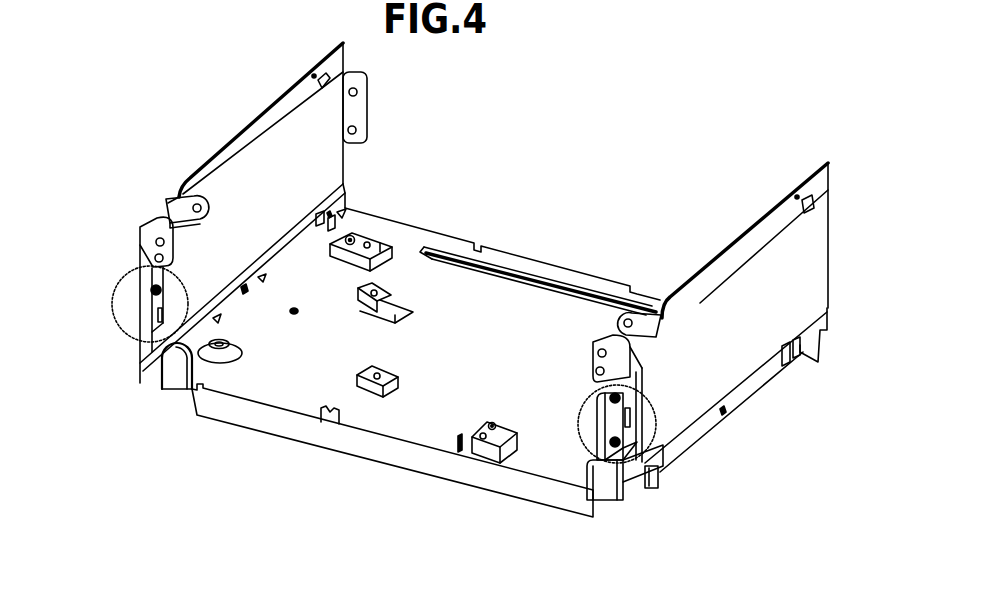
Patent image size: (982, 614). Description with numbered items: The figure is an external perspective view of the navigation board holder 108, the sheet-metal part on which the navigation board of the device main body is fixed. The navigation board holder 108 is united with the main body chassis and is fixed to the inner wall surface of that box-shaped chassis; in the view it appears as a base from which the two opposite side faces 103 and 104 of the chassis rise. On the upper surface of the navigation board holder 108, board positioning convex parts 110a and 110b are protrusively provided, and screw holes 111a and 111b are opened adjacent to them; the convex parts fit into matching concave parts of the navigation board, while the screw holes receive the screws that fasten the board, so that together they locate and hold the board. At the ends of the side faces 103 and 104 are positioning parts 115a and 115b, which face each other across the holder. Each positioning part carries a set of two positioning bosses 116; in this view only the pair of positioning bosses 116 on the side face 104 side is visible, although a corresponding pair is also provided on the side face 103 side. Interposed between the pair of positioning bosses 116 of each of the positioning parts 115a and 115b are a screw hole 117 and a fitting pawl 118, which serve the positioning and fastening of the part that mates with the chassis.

The side face 103 is at (268, 108).
The side face 104 is at (758, 232).
The navigation board holder 108 is at (298, 402).
The board positioning convex part 110a is at (352, 240).
The board positioning convex part 110b is at (500, 437).
The screw hole 111a is at (372, 244).
The screw hole 111b is at (467, 433).
The positioning part 115a is at (138, 340).
The positioning part 115b is at (647, 488).
The positioning bosses 116 is at (616, 398).
The screw hole 117 is at (156, 290).
The fitting pawl 118 is at (147, 325).